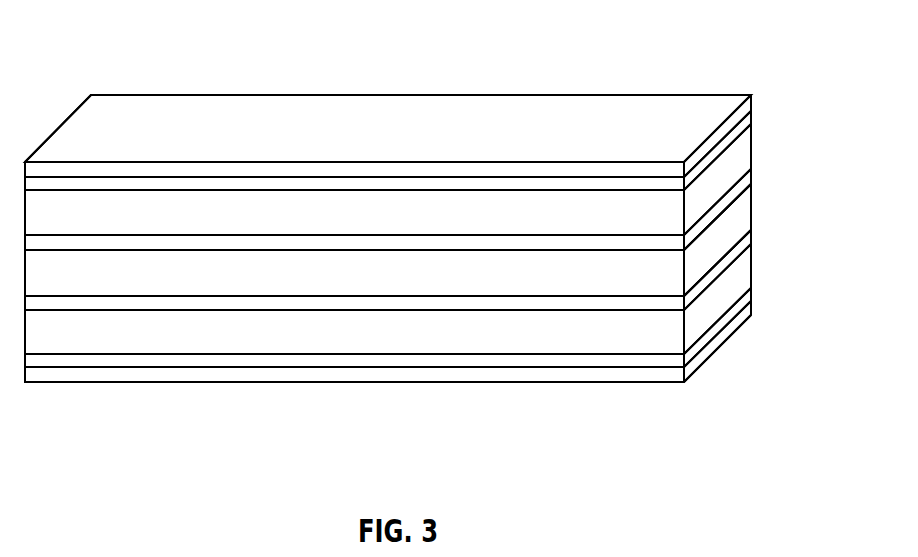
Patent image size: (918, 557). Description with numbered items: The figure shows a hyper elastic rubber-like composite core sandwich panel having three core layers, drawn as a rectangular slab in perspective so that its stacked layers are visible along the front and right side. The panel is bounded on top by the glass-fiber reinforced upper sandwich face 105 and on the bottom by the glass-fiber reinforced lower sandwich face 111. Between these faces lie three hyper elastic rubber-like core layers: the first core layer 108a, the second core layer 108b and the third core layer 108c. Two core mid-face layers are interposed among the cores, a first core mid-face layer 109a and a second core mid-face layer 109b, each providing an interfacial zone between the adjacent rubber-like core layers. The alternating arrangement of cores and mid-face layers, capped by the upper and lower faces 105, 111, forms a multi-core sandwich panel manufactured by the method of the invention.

The upper sandwich face 105 is at (253, 112).
The lower sandwich face 111 is at (252, 372).
The first core layer 108a is at (670, 361).
The second core layer 108b is at (664, 306).
The third core layer 108c is at (745, 122).
The first core mid-face layer 109a is at (653, 278).
The second core mid-face layer 109b is at (742, 180).